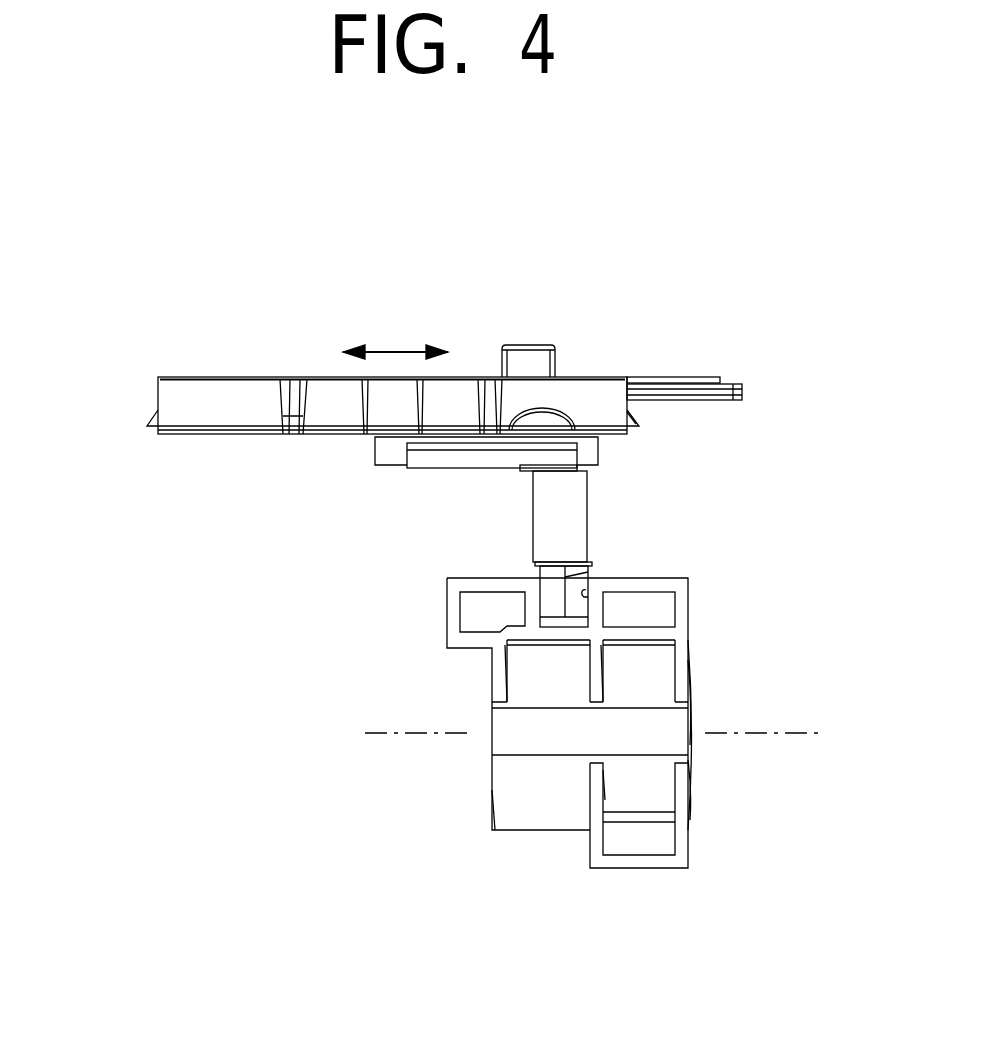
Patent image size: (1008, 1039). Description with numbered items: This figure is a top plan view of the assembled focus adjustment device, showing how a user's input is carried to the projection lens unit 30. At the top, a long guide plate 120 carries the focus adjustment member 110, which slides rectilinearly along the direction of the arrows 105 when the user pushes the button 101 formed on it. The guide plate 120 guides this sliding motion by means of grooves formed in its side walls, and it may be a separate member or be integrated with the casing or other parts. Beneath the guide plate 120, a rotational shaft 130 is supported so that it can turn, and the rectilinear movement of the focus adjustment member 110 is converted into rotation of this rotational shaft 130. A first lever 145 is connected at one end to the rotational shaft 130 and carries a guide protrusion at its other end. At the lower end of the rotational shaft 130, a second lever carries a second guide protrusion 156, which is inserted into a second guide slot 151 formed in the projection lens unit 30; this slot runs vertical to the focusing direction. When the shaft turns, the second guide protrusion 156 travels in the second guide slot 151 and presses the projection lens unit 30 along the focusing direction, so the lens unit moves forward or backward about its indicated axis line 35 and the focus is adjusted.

The projection lens unit 30 is at (548, 853).
The rotation axis 35 is at (764, 733).
The button 101 is at (530, 345).
The arrows 105 is at (396, 350).
The focus adjustment member 110 is at (742, 390).
The guide plate 120 is at (168, 396).
The rotational shaft 130 is at (538, 528).
The first lever 145 is at (440, 465).
The second guide slot 151 is at (586, 590).
The second guide protrusion 156 is at (563, 573).